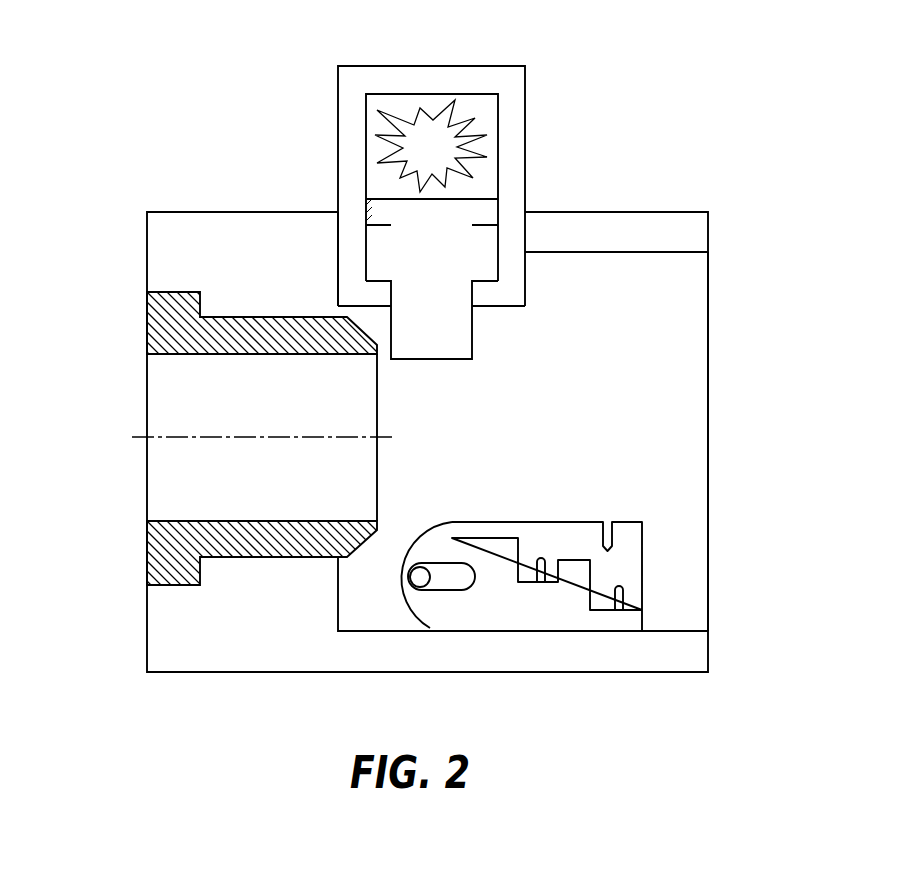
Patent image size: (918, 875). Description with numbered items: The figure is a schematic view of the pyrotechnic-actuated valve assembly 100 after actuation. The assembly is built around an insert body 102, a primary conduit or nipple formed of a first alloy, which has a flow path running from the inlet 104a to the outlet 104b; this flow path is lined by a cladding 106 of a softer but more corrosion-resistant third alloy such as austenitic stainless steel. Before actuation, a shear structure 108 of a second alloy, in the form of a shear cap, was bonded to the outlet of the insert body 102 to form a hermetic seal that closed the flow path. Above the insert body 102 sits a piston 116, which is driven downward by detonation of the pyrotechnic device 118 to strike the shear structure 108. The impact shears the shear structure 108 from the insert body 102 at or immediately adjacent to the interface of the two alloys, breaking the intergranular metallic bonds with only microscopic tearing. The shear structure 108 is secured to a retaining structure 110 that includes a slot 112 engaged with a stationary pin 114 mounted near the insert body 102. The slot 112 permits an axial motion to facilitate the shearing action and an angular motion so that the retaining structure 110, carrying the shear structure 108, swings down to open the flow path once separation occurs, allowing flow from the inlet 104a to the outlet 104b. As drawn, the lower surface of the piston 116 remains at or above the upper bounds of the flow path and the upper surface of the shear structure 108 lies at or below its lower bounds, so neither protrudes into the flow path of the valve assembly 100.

The pyrotechnic-actuated valve assembly 100 is at (67, 73).
The insert body 102 is at (178, 327).
The inlet 104a is at (157, 410).
The outlet 104b is at (369, 410).
The cladding 106 is at (195, 520).
The shear structure 108 is at (625, 572).
The retaining structure 110 is at (533, 613).
The slot 112 is at (455, 578).
The pin 114 is at (420, 577).
The piston 116 is at (437, 250).
The pyrotechnic device 118 is at (435, 142).